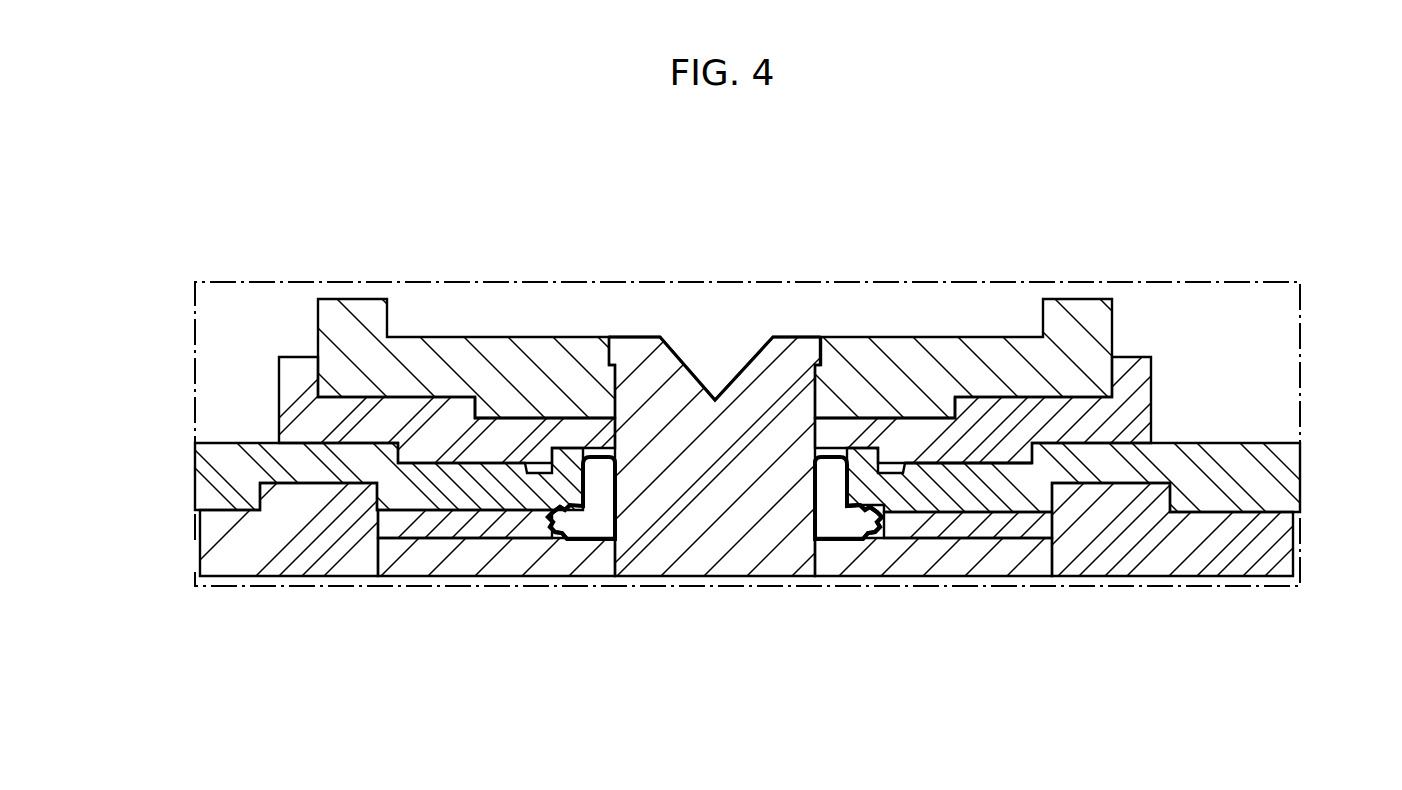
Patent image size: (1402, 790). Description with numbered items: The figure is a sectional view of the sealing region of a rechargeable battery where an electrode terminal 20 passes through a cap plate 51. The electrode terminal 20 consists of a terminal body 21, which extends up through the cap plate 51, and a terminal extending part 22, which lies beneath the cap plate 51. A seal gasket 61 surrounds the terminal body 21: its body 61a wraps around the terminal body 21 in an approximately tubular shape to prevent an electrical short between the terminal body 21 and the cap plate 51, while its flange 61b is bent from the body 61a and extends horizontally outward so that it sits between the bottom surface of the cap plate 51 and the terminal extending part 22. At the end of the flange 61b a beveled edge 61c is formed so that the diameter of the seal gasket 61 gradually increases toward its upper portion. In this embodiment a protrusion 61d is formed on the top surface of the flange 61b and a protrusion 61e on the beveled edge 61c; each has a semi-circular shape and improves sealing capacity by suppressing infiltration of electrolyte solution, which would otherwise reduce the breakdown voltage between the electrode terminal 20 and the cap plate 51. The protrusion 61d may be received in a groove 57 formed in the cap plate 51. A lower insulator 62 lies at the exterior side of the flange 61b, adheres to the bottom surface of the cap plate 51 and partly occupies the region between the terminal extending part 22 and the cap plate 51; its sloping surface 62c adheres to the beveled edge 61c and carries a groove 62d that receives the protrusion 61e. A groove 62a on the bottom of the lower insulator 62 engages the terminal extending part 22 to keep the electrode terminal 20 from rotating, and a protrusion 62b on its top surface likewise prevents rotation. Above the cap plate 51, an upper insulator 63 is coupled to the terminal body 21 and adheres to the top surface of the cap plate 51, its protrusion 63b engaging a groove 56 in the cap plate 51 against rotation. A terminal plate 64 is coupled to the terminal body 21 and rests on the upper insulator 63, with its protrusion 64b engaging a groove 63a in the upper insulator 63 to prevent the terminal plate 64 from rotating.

The electrode terminal 20 is at (640, 325).
The terminal body 21 is at (713, 453).
The terminal extending part 22 is at (462, 573).
The cap plate 51 is at (1290, 477).
The groove 56 is at (1003, 465).
The groove 57 is at (884, 518).
The seal gasket 61 is at (837, 457).
The body 61a is at (818, 490).
The flange 61b is at (829, 530).
The beveled edge 61c is at (866, 539).
The protrusion 61d is at (872, 506).
The protrusion 61e is at (566, 541).
The lower insulator 62 is at (215, 537).
The groove 62a is at (428, 537).
The protrusion 62b is at (287, 495).
The sloping surface 62c is at (602, 541).
The groove 62d is at (548, 518).
The upper insulator 63 is at (1140, 398).
The groove 63a is at (917, 418).
The protrusion 63b is at (1020, 455).
The terminal plate 64 is at (356, 307).
The protrusion 64b is at (505, 408).